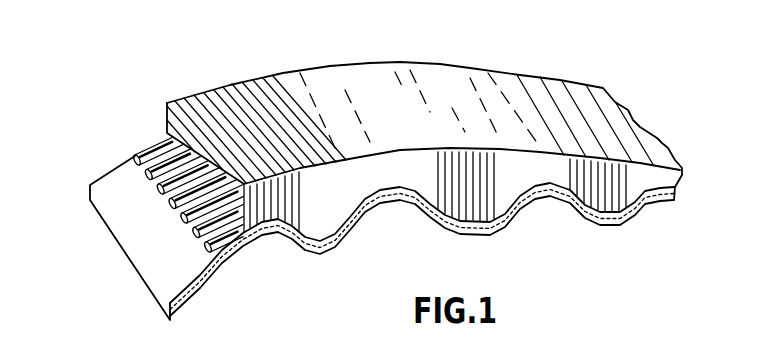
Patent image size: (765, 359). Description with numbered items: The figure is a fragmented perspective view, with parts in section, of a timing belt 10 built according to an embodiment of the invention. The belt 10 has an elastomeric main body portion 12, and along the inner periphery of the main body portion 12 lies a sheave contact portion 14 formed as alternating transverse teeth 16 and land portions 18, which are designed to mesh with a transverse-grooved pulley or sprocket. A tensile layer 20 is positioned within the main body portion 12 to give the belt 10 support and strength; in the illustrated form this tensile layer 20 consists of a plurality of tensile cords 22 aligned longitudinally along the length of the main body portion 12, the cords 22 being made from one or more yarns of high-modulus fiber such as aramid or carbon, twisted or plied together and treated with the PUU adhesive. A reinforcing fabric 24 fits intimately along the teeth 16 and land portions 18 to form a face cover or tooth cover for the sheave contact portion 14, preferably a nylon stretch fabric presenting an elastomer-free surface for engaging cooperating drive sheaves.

The timing belt 10 is at (230, 78).
The elastomeric main body portion 12 is at (417, 120).
The sheave contact portion 14 is at (306, 244).
The transverse teeth 16 is at (340, 217).
The land portions 18 is at (410, 197).
The tensile layer 20 is at (143, 147).
The tensile cords 22 is at (157, 197).
The reinforcing fabric 24 is at (552, 200).